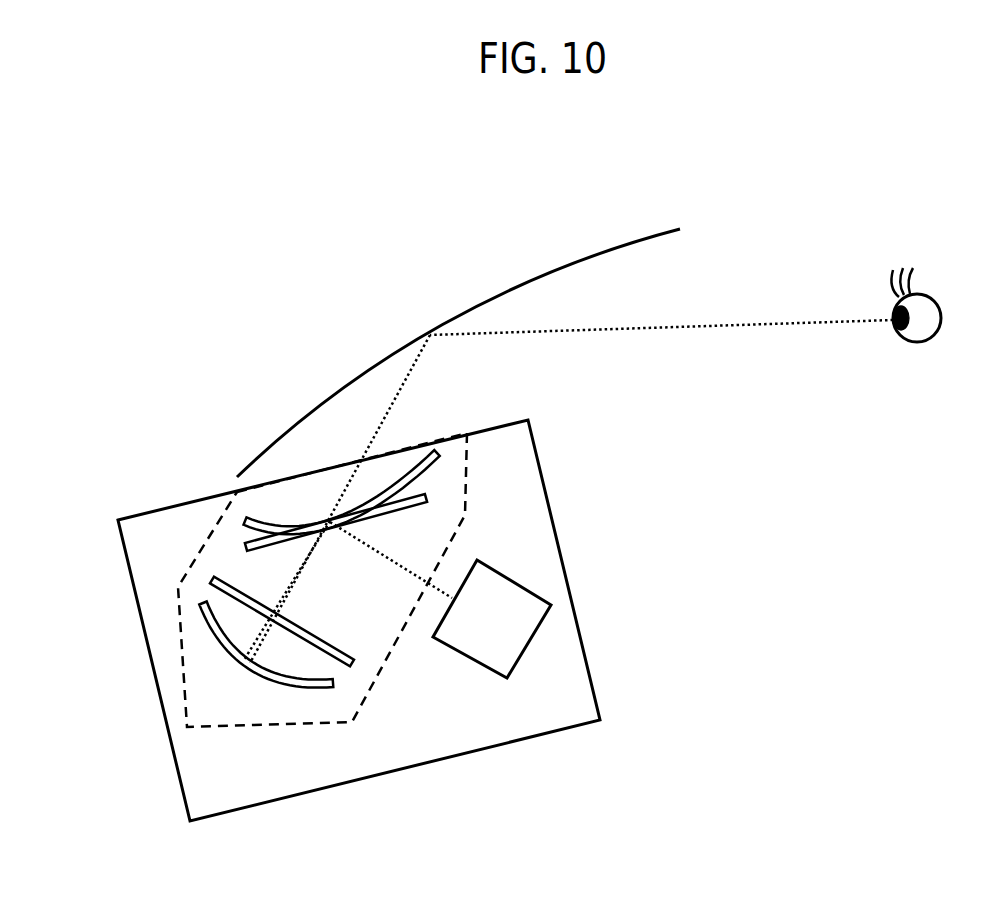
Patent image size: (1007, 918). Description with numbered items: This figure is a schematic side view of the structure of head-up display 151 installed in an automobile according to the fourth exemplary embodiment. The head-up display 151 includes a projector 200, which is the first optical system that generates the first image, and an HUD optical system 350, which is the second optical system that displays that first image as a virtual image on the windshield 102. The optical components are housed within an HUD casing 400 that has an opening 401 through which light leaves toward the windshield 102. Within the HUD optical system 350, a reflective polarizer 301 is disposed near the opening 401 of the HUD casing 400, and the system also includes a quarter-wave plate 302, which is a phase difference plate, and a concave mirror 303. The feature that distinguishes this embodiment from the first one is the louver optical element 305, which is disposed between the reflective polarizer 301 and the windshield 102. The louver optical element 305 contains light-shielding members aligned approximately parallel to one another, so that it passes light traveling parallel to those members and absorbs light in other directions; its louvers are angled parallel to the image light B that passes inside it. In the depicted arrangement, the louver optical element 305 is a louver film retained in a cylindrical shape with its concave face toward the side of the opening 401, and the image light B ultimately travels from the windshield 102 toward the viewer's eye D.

The windshield 102 is at (512, 290).
The head-up display 151 is at (545, 678).
The projector 200 is at (540, 625).
The reflective polarizer 301 is at (427, 500).
The quarter-wave plate 302 is at (210, 582).
The concave mirror 303 is at (207, 638).
The louver optical element 305 is at (243, 520).
The HUD optical system 350 is at (255, 727).
The HUD casing 400 is at (433, 765).
The opening 401 is at (385, 450).
The image light B is at (393, 563).
The driver eye D is at (942, 317).